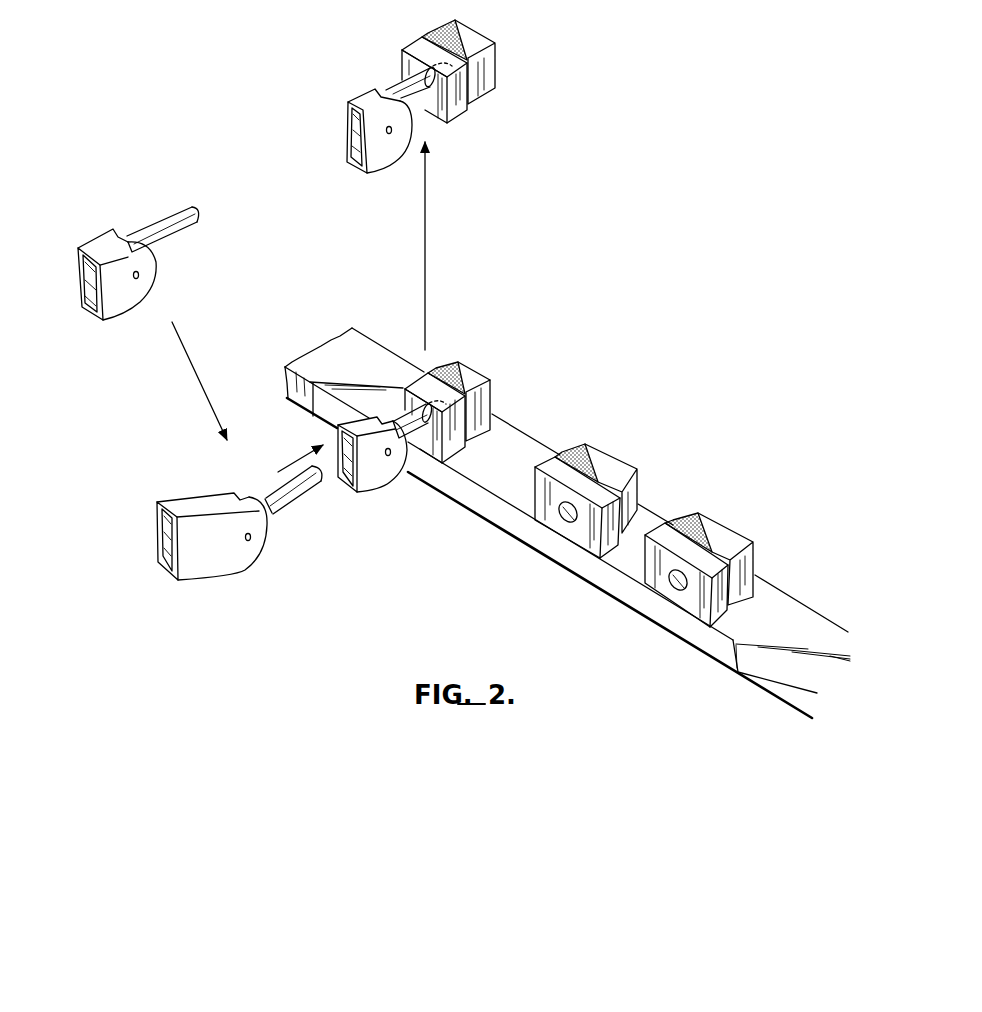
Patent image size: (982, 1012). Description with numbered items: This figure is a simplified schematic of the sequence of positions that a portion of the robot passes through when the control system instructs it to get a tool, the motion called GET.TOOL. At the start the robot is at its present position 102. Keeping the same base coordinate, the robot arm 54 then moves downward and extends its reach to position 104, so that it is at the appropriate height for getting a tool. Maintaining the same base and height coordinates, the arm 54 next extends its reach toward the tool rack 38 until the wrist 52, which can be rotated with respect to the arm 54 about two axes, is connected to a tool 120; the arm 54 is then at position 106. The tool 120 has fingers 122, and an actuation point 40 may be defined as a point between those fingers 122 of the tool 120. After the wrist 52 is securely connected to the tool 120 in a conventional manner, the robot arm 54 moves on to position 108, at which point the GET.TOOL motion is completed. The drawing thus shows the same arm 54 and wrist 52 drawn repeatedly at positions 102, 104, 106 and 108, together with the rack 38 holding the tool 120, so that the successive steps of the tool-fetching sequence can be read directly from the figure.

The tool rack 38 is at (778, 617).
The actuation point 40 is at (577, 318).
The wrist 52 is at (181, 208).
The robot arm 54 is at (139, 283).
The position 102 is at (206, 389).
The position 104 is at (190, 492).
The position 106 is at (369, 494).
The position 108 is at (445, 131).
The tool 120 is at (440, 359).
The fingers 122 is at (482, 410).